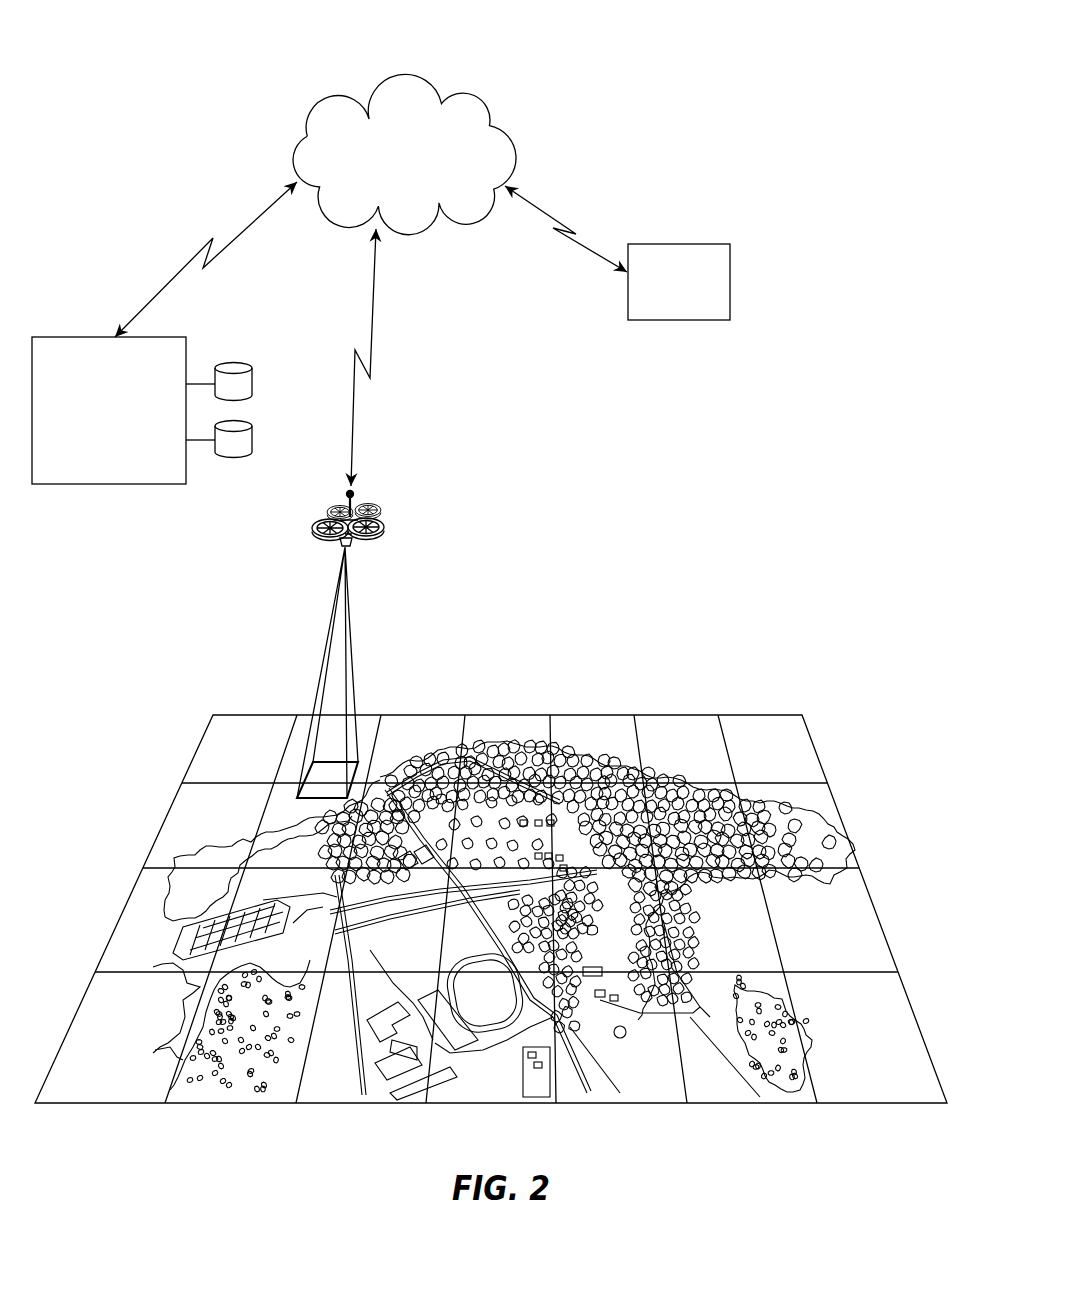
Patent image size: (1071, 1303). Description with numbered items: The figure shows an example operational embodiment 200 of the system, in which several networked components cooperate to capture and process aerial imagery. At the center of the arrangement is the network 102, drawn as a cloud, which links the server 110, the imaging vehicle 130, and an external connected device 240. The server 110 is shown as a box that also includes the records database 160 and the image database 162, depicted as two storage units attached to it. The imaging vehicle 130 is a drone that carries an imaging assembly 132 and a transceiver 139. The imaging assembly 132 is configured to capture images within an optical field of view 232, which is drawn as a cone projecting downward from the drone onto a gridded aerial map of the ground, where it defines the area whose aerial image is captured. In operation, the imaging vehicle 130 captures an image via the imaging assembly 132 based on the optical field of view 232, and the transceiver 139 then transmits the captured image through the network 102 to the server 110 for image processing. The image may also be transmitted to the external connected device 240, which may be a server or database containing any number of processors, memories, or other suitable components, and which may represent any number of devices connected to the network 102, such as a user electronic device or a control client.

The system 200 is at (788, 69).
The network 102 is at (342, 100).
The server 110 is at (67, 336).
The database 160 is at (252, 377).
The database 162 is at (252, 437).
The client device 240 is at (702, 299).
The unmanned aerial vehicle 130 is at (385, 532).
The antenna 139 is at (355, 493).
The camera 132 is at (350, 544).
The image capture area 232 is at (305, 756).